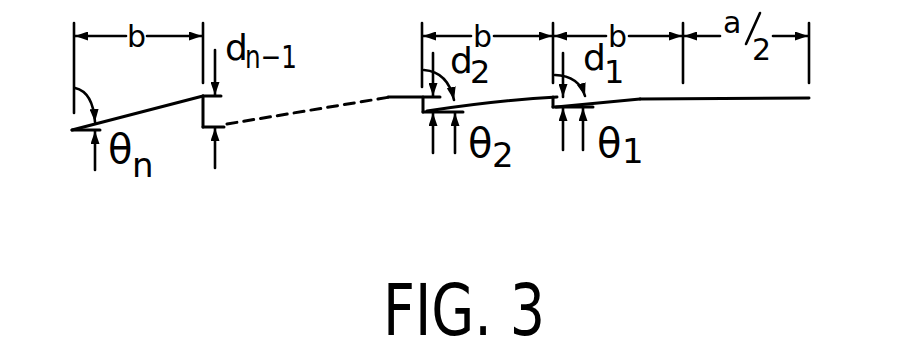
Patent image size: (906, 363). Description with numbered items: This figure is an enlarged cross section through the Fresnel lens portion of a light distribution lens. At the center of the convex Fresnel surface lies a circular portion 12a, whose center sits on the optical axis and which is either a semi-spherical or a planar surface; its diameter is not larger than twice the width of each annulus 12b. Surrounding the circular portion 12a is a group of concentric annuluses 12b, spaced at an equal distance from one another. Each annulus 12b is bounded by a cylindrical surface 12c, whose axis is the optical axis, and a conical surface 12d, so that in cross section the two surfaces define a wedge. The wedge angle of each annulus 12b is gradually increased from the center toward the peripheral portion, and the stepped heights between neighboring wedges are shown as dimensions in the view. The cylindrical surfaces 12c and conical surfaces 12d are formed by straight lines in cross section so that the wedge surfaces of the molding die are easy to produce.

The circular portion 12a is at (775, 99).
The annulus 12b is at (127, 88).
The cylindrical surface 12c is at (550, 101).
The conical surface 12d is at (640, 100).